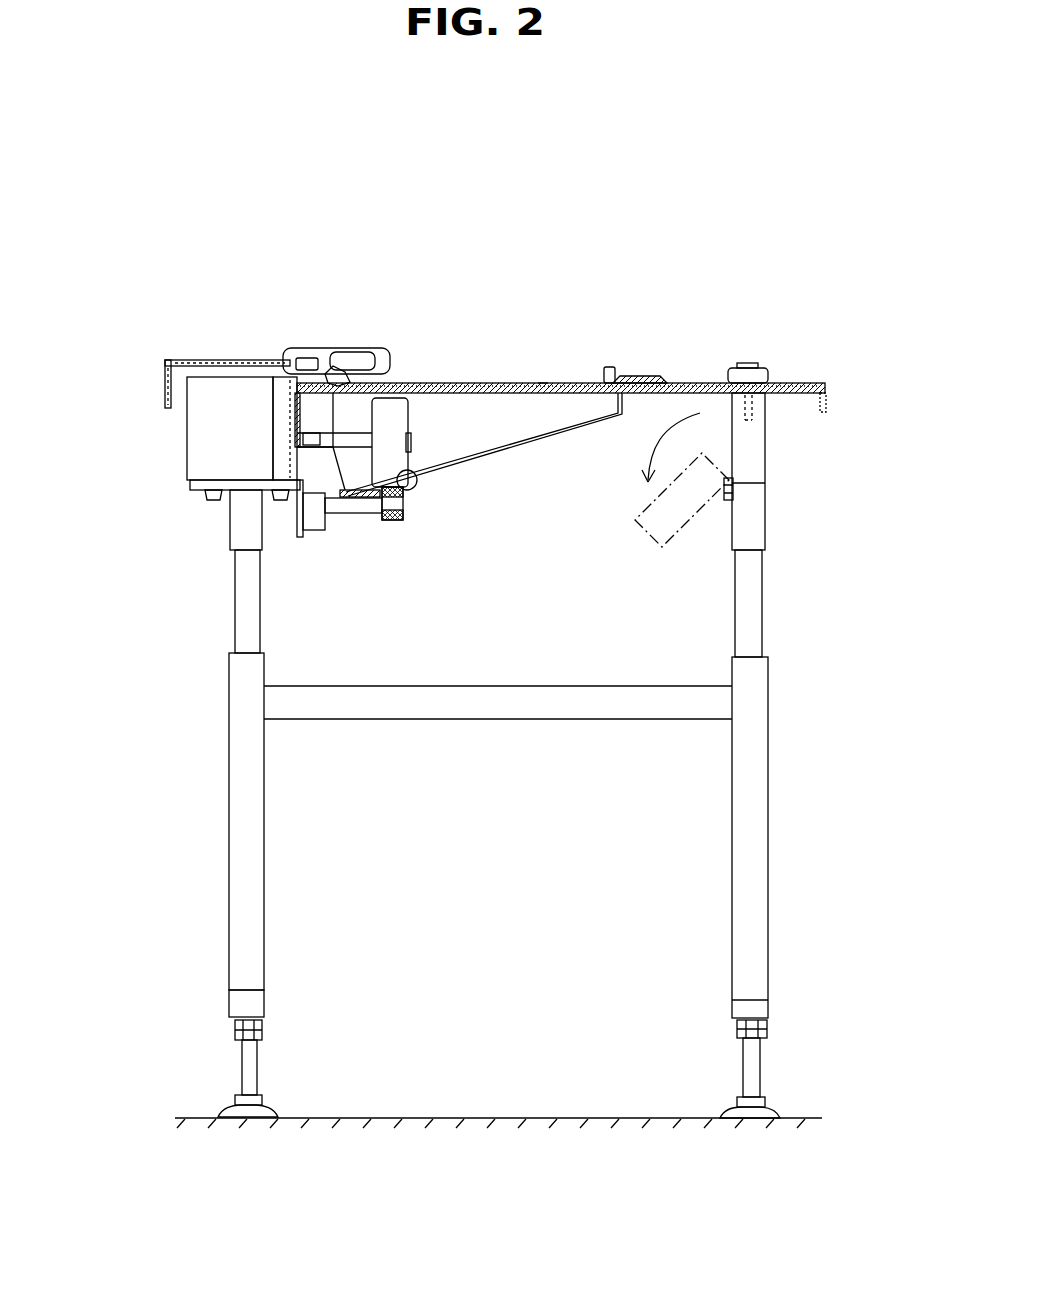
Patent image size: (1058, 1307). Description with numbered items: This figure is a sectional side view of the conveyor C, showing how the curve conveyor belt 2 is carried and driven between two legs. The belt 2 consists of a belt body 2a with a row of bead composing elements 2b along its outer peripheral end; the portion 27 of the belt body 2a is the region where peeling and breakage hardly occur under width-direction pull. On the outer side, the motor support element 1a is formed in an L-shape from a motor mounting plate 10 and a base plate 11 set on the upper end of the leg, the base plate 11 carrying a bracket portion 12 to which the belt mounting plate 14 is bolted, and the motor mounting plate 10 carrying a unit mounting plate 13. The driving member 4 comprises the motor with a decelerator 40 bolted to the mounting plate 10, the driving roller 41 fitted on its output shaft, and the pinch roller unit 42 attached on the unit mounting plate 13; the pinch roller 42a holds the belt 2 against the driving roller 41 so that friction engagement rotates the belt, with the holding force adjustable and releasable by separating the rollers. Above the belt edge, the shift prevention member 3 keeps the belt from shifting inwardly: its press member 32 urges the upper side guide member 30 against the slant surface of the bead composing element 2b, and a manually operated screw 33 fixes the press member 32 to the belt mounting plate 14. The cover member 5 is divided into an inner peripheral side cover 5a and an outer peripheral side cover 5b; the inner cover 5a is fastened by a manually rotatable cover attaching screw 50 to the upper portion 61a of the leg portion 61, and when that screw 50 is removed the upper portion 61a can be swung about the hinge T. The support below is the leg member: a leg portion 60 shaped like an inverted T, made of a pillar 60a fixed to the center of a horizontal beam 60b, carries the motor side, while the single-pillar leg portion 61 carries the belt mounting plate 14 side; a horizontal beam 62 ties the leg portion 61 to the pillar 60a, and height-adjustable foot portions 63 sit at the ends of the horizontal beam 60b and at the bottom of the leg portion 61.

The conveyor C is at (715, 206).
The curve conveyor belt 2 is at (567, 237).
The belt body 2a is at (490, 384).
The bead composing element 2b is at (398, 388).
The shift prevention member 3 is at (380, 172).
The upper side guide member 30 is at (343, 352).
The press member 32 is at (330, 350).
The screw 33 is at (303, 350).
The driving member 4 is at (540, 797).
The motor with a decelerator 40 is at (360, 515).
The driving roller 41 is at (413, 466).
The pinch roller unit 42 is at (338, 545).
The pinch roller 42a is at (405, 492).
The cover member 5 is at (668, 125).
The inner peripheral side cover 5a is at (643, 383).
The outer peripheral side cover 5b is at (385, 378).
The motor mounting plate 10 is at (290, 413).
The base plate 11 is at (234, 481).
The bracket portion 12 is at (290, 508).
The unit mounting plate 13 is at (305, 478).
The belt mounting plate 14 is at (543, 383).
The motor support element 1a is at (113, 405).
The portion of the belt body 27 is at (392, 457).
The cover attaching screw 50 is at (760, 365).
The leg portion 60 is at (125, 870).
The pillar 60a is at (243, 890).
The horizontal beam 60b is at (243, 1000).
The leg portion 61 is at (767, 826).
The upper portion of the leg portion 61a is at (757, 457).
The horizontal beam 62 is at (615, 705).
The foot portion 63 is at (216, 1079).
The hinge T is at (703, 548).